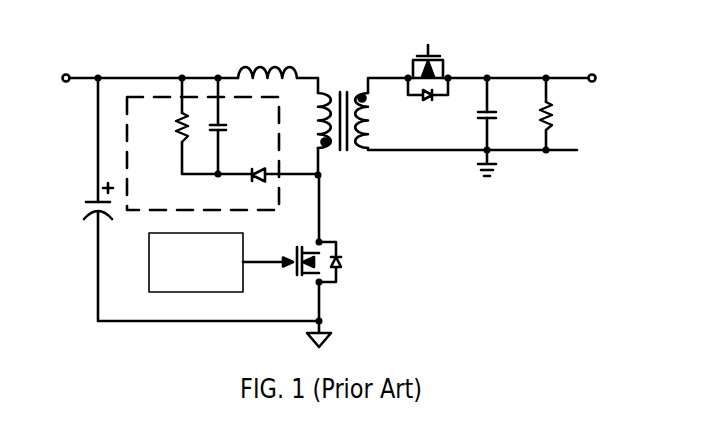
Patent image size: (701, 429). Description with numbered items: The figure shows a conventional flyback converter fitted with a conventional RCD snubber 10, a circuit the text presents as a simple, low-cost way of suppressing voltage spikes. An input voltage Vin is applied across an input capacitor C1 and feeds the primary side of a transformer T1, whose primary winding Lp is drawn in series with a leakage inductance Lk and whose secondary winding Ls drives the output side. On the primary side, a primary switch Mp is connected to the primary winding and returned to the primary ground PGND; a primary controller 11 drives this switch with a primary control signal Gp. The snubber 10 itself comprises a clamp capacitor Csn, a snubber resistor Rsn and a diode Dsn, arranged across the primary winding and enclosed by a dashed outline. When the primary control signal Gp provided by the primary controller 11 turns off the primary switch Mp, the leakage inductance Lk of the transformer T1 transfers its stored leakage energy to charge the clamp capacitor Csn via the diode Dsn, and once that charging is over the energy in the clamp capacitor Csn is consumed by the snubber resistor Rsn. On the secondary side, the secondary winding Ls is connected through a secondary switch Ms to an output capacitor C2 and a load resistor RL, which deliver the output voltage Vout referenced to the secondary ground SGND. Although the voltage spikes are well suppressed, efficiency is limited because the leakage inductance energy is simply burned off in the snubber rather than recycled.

The RCD snubber 10 is at (163, 200).
The primary controller 11 is at (245, 249).
The input voltage terminal Vin is at (47, 78).
The output voltage terminal Vout is at (616, 78).
The input capacitor C1 is at (89, 192).
The output capacitor C2 is at (499, 127).
The snubber resistor Rsn is at (162, 127).
The clamp capacitor Csn is at (238, 128).
The diode Dsn is at (253, 188).
The leakage inductance Lk is at (267, 59).
The transformer T1 is at (344, 100).
The primary winding Lp is at (312, 120).
The secondary winding Ls is at (375, 120).
The secondary side switch Ms is at (428, 87).
The primary switch Mp is at (337, 262).
The primary control signal Gp is at (268, 273).
The load resistor RL is at (561, 116).
The secondary ground SGND is at (521, 168).
The primary ground PGND is at (288, 337).